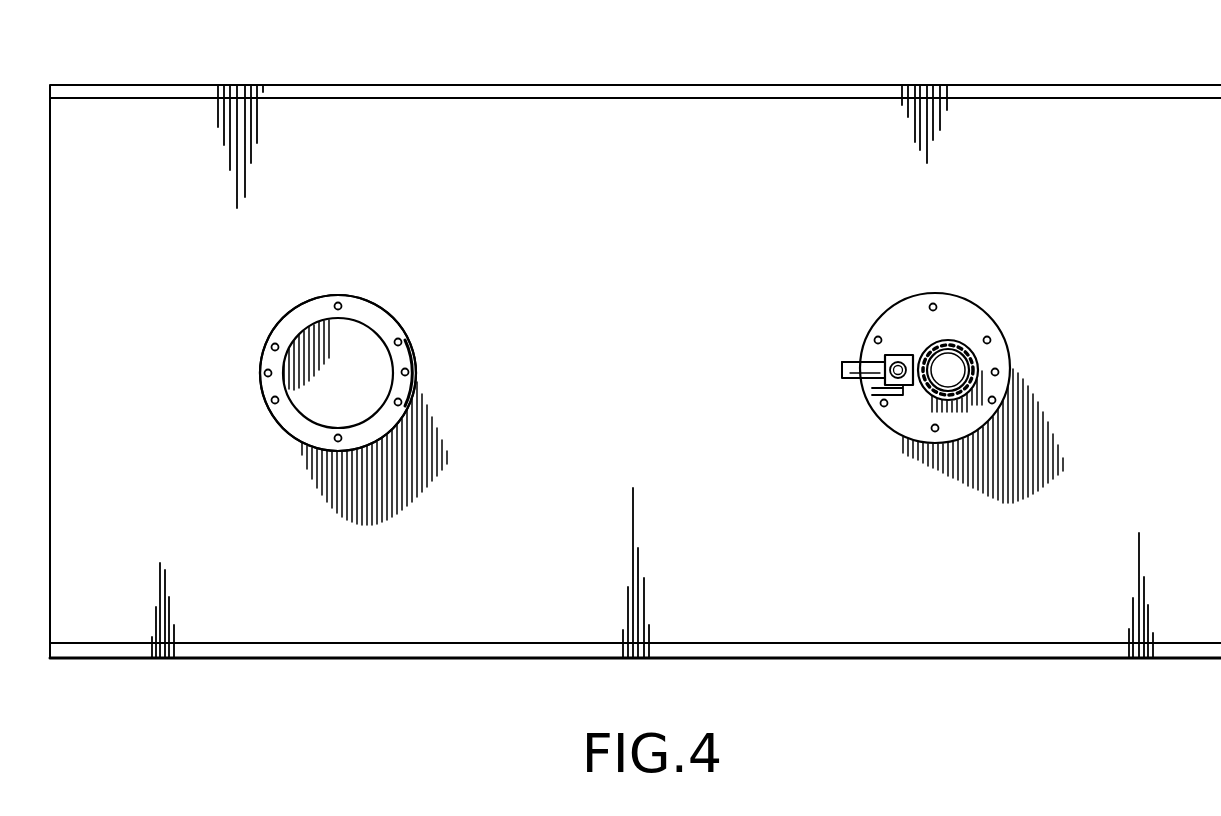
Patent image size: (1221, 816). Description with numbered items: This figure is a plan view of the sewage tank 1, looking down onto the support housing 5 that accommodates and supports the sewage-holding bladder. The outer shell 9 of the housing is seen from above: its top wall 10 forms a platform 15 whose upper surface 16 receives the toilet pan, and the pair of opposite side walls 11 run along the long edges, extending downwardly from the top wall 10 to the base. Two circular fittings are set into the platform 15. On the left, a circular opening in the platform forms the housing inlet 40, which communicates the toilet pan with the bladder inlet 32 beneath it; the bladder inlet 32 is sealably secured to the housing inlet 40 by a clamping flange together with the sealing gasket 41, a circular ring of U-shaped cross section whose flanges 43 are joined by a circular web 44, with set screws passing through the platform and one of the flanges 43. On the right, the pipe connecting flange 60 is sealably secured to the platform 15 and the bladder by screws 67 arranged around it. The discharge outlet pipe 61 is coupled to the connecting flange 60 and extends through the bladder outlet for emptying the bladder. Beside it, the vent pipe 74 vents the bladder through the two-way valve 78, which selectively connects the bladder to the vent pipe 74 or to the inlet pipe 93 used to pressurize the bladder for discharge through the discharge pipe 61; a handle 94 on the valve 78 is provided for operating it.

The sewage tank 1 is at (922, 53).
The support housing 5 is at (783, 108).
The outer shell 9 is at (600, 110).
The top wall 10 is at (183, 114).
The side walls 11 is at (411, 93).
The platform 15 is at (588, 617).
The upper surface 16 is at (826, 617).
The bladder inlet 32 is at (313, 323).
The housing inlet 40 is at (355, 388).
The sealing gasket 41 is at (386, 314).
The flanges 43 is at (413, 350).
The circular web 44 is at (313, 413).
The pipe connecting flange 60 is at (998, 357).
The discharge outlet pipe 61 is at (948, 362).
The screws 67 is at (935, 305).
The vent pipe 74 is at (897, 362).
The two-way valve 78 is at (862, 366).
The inlet pipe 93 is at (850, 374).
The handle 94 is at (868, 405).